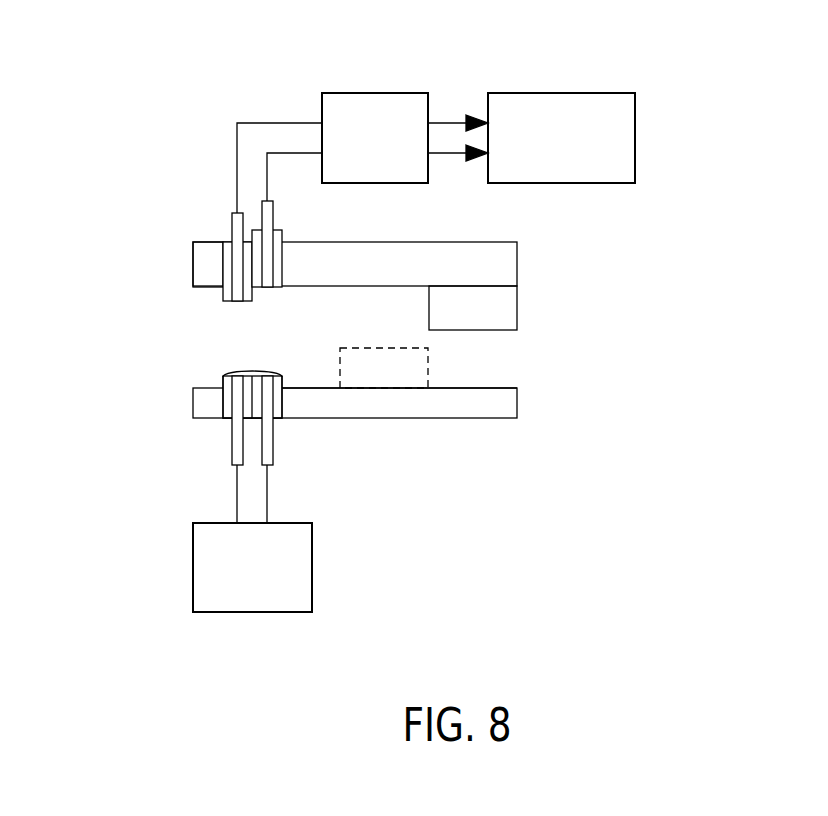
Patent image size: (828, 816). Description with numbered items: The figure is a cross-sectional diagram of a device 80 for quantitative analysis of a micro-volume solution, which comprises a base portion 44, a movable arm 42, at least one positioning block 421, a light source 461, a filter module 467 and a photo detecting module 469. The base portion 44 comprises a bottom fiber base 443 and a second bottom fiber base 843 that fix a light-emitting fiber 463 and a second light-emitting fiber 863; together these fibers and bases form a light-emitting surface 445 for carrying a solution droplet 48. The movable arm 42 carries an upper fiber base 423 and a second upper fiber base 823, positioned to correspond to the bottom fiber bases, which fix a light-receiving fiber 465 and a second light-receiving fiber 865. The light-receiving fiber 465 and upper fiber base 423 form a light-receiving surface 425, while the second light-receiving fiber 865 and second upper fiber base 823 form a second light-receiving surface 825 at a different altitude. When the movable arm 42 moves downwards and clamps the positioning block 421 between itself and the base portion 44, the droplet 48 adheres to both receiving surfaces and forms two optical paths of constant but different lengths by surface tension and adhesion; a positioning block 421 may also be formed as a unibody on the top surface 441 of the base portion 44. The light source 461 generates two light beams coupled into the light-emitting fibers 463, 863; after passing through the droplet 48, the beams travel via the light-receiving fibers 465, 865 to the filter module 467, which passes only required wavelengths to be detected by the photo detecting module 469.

The device for quantitative analysis of a micro-volume solution 80 is at (797, 100).
The filter module 467 is at (357, 93).
The photo detecting module 469 is at (605, 93).
The movable arm 42 is at (440, 242).
The positioning block 421 is at (517, 305).
The upper fiber base 423 is at (223, 268).
The light-receiving surface 425 is at (223, 302).
The light-receiving fiber 465 is at (232, 227).
The second light-receiving fiber 865 is at (245, 197).
The second upper fiber base 823 is at (283, 268).
The second light-receiving surface 825 is at (268, 288).
The base portion 44 is at (458, 418).
The top surface 441 is at (477, 388).
The solution droplet 48 is at (227, 372).
The light-emitting surface 445 is at (252, 367).
The bottom fiber base 443 is at (223, 405).
The second bottom fiber base 843 is at (282, 407).
The light-emitting fiber 463 is at (233, 448).
The second light-emitting fiber 863 is at (277, 455).
The light source 461 is at (193, 585).